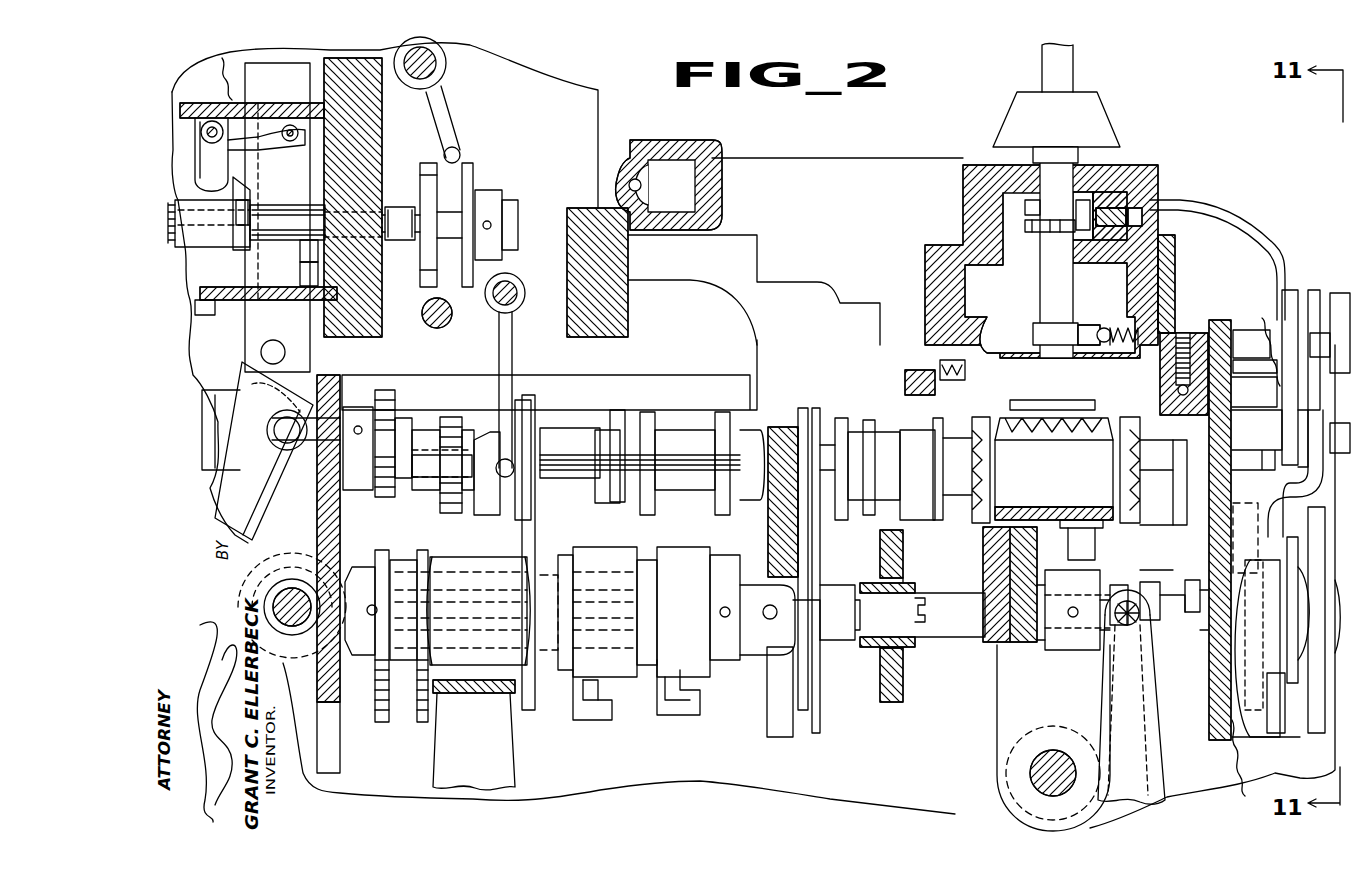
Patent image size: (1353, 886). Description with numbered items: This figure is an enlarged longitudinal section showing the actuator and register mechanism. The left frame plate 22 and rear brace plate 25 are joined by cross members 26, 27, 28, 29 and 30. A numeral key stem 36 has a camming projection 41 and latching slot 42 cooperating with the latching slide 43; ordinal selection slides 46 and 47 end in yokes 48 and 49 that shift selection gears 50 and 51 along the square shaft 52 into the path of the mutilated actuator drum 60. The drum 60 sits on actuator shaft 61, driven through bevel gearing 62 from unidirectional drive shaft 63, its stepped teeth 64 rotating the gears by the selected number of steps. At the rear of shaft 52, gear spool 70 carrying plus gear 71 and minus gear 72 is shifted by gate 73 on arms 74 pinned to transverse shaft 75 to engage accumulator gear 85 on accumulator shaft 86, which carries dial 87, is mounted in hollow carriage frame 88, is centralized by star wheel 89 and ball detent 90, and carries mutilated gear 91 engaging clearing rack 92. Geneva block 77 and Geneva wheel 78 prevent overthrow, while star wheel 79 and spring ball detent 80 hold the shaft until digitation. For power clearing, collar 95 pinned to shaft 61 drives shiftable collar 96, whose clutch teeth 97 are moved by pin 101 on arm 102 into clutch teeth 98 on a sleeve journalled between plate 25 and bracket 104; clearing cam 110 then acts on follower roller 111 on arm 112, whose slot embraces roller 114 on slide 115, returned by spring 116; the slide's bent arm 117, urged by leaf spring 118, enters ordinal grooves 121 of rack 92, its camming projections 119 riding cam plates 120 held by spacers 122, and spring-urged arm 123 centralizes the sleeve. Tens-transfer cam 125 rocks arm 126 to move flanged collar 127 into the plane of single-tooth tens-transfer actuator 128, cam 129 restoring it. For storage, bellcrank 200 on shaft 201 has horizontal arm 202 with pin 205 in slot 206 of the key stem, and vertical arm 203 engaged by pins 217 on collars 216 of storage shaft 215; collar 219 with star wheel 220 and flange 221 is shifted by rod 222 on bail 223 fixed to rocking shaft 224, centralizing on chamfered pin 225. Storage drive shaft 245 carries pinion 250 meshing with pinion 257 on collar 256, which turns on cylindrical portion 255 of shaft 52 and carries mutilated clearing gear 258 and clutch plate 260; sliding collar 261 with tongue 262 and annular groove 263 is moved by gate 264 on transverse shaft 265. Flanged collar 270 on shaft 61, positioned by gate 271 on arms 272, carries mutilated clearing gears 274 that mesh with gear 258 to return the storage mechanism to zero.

The left frame plate 22 is at (712, 786).
The brace plate 25 is at (1215, 690).
The intermediate cross member 26 is at (372, 77).
The intermediate cross member 27 is at (325, 530).
The intermediate cross member 28 is at (780, 427).
The intermediate cross member 29 is at (890, 703).
The intermediate cross member 30 is at (990, 645).
The numeral key stem 36 is at (272, 197).
The camming projection 41 is at (312, 273).
The latching slot 42 is at (300, 252).
The latching slide 43 is at (210, 316).
The ordinal selection slide 46 is at (233, 445).
The ordinal selection slide 47 is at (207, 432).
The bent over yoke 48 is at (745, 430).
The bent over yoke 49 is at (618, 412).
The selection gear 50 is at (722, 415).
The selection gear 51 is at (650, 415).
The square shaft 52 is at (563, 455).
The mutilated actuator drum 60 is at (650, 690).
The actuator shaft 61 is at (868, 655).
The bevel gearing 62 is at (350, 568).
The unidirectional drive shaft 63 is at (290, 600).
The stepped teeth 64 is at (605, 700).
The gear spool 70 is at (1062, 473).
The plus gear 71 is at (972, 432).
The minus gear 72 is at (1140, 480).
The gate 73 is at (1068, 528).
The arm 74 is at (1010, 707).
The transverse shaft 75 is at (1040, 770).
The Geneva block 77 is at (798, 735).
The Geneva wheel 78 is at (804, 408).
The star wheel 79 is at (1205, 452).
The spring ball detent 80 is at (1175, 330).
The accumulator gear 85 is at (1070, 425).
The accumulator dial shaft 86 is at (1048, 285).
The dial 87 is at (1097, 112).
The hollow frame 88 is at (1145, 165).
The star wheel 89 is at (1090, 328).
The ball detent 90 is at (1103, 328).
The mutilated gear 91 is at (1032, 232).
The clearing rack 92 is at (1085, 205).
The collar 95 is at (1072, 650).
The shiftable collar 96 is at (1120, 585).
The clutch teeth 97 is at (1148, 582).
The clutch teeth 98 is at (1190, 580).
The pin 101 is at (1125, 650).
The arm 102 is at (1118, 751).
The bracket 104 is at (1312, 740).
The clearing cam 110 is at (1215, 758).
The follower roller 111 is at (1245, 530).
The arm 112 is at (1314, 290).
The roller 114 is at (1340, 293).
The slide 115 is at (1185, 372).
The spring 116 is at (1270, 480).
The bent arm 117 is at (1222, 240).
The leaf spring 118 is at (1180, 440).
The camming projections 119 is at (1251, 343).
The cam plates 120 is at (1290, 290).
The ordinal grooves 121 is at (1140, 215).
The spacers 122 is at (1242, 354).
The spring-urged arm 123 is at (1280, 735).
The tens-transfer cam 125 is at (1095, 405).
The arm 126 is at (912, 370).
The flanged collar 127 is at (842, 418).
The tens-transfer actuator 128 is at (815, 733).
The cam 129 is at (880, 545).
The bellcrank member 200 is at (180, 152).
The transverse shaft 201 is at (212, 122).
The horizontal arm 202 is at (262, 150).
The vertical arm 203 is at (212, 222).
The pin 205 is at (290, 124).
The slot 206 is at (215, 69).
The storage shaft 215 is at (300, 195).
The collar 216 is at (240, 240).
The pin 217 is at (232, 236).
The collar 219 is at (385, 390).
The star wheel 220 is at (410, 250).
The flange 221 is at (490, 195).
The round rod 222 is at (450, 175).
The bail 223 is at (440, 100).
The rocking shaft 224 is at (432, 56).
The chamfered pin 225 is at (398, 205).
The storage drive shaft 245 is at (287, 440).
The pinion 250 is at (405, 418).
The cylindrical portion 255 is at (430, 432).
The collar 256 is at (425, 480).
The pinion 257 is at (368, 492).
The mutilated clearing gear 258 is at (450, 418).
The clutch plate 260 is at (470, 430).
The collar 261 is at (520, 400).
The tongue 262 is at (478, 516).
The annular groove 263 is at (536, 532).
The clutch operating gate 264 is at (572, 300).
The transverse shaft 265 is at (517, 278).
The flanged collar 270 is at (468, 665).
The transverse gate 271 is at (503, 693).
The arm 272 is at (450, 769).
The mutilated clearing gear 274 is at (418, 725).